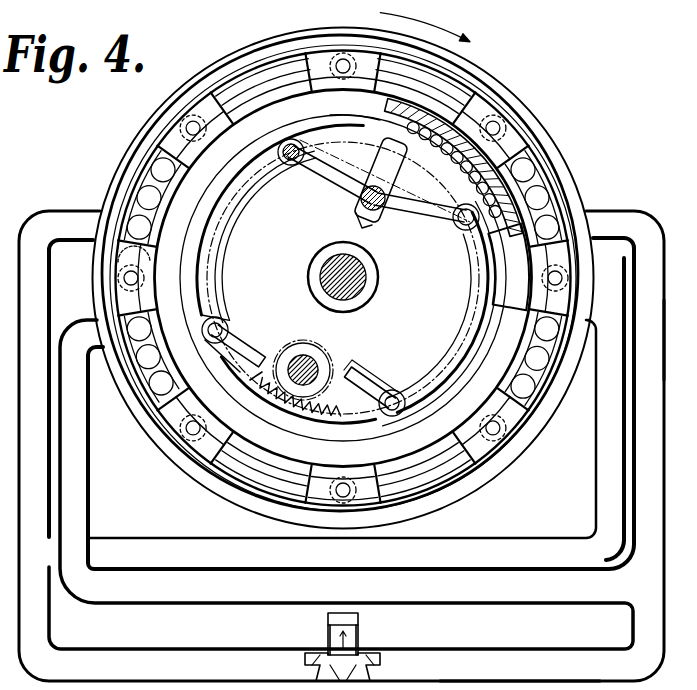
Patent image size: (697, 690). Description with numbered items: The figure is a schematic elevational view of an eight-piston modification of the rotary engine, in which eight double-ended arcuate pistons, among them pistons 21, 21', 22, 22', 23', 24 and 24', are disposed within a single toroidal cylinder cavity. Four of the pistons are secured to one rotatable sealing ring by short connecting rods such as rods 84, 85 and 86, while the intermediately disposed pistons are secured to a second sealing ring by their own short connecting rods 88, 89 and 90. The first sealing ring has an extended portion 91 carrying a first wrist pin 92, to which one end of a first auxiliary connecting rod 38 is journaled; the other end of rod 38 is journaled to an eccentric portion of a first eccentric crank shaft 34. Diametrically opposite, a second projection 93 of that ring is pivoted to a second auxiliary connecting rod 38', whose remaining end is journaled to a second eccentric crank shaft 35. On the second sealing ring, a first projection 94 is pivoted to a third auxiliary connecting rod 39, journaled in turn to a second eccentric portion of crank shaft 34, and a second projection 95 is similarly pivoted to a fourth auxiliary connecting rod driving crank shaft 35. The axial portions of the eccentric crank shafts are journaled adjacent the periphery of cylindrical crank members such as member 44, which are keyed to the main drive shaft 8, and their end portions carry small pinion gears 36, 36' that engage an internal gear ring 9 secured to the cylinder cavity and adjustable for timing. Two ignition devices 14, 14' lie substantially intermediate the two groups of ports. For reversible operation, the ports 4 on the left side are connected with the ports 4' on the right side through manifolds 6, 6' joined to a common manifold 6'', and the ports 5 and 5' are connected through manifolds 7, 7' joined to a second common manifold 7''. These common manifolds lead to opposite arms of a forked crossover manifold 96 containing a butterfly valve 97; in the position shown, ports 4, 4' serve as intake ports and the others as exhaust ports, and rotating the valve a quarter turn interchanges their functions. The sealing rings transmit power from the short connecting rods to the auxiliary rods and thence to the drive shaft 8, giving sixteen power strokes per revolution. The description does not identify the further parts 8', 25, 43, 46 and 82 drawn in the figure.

The ports 4 is at (152, 197).
The ports 4' is at (570, 250).
The ports 5 is at (337, 429).
The ports 5' is at (368, 281).
The manifold 6 is at (341, 370).
The manifold 6' is at (594, 409).
The common manifold 6'' is at (341, 485).
The manifold 7 is at (341, 446).
The manifold 7' is at (673, 303).
The second common manifold 7'' is at (520, 653).
The main drive shaft 8 is at (355, 284).
The bearing segment 8' is at (533, 197).
The internal gear ring 9 is at (262, 392).
The ignition device 14 is at (295, 59).
The ignition device 14' is at (424, 470).
The double-ended arcuate piston 21 is at (400, 59).
The double-ended arcuate piston 21' is at (515, 124).
The double-ended arcuate piston 22 is at (582, 278).
The double-ended arcuate piston 22' is at (516, 431).
The double-ended arcuate piston 23' is at (188, 446).
The double-ended arcuate piston 24 is at (103, 278).
The double-ended arcuate piston 24' is at (168, 128).
The clamping screw 25 is at (303, 510).
The first eccentric crank shaft 34 is at (412, 210).
The second eccentric crank shaft 35 is at (312, 370).
The small pinion gear 36 is at (454, 168).
The small pinion gear 36' is at (303, 356).
The first auxiliary connecting rod 38 is at (420, 226).
The second auxiliary connecting rod 38' is at (242, 347).
The third auxiliary connecting rod 39 is at (340, 183).
The pin 43 is at (287, 164).
The cylindrical crank member 44 is at (440, 349).
The hub 46 is at (340, 243).
The ring segment 82 is at (328, 483).
The short connecting rod 84 is at (508, 267).
The short connecting rod 85 is at (355, 105).
The short connecting rod 86 is at (125, 272).
The short connecting rod 88 is at (533, 358).
The short connecting rod 89 is at (262, 470).
The short connecting rod 90 is at (240, 166).
The extended portion 91 is at (471, 232).
The first wrist pin 92 is at (462, 228).
The second sealing ring projection 93 is at (226, 324).
The first projection 94 is at (298, 165).
The second projection 95 is at (398, 392).
The forked crossover manifold 96 is at (363, 645).
The butterfly valve 97 is at (372, 663).